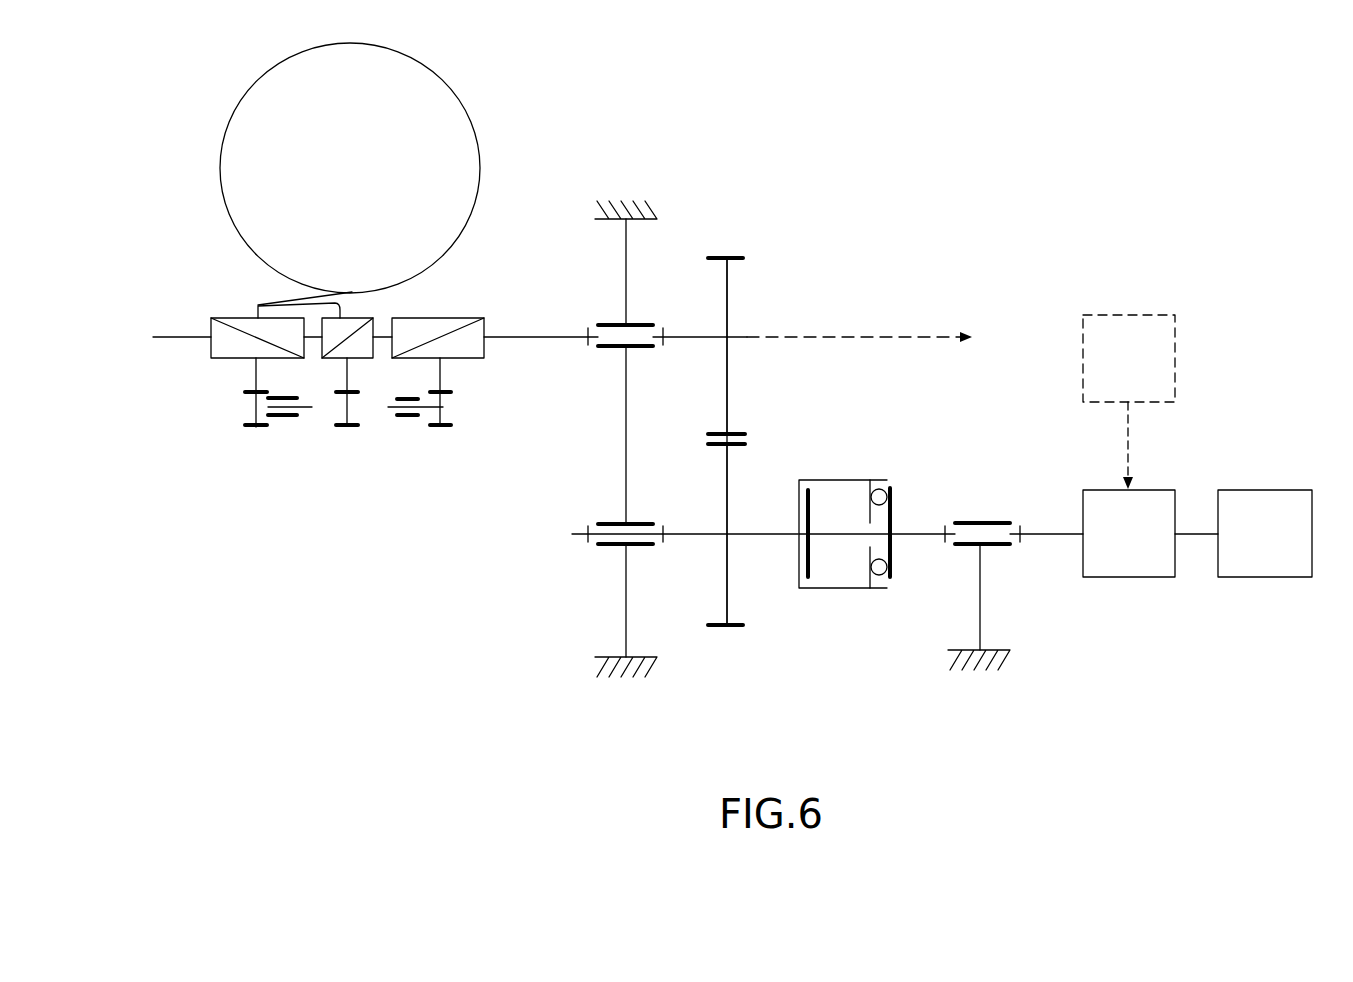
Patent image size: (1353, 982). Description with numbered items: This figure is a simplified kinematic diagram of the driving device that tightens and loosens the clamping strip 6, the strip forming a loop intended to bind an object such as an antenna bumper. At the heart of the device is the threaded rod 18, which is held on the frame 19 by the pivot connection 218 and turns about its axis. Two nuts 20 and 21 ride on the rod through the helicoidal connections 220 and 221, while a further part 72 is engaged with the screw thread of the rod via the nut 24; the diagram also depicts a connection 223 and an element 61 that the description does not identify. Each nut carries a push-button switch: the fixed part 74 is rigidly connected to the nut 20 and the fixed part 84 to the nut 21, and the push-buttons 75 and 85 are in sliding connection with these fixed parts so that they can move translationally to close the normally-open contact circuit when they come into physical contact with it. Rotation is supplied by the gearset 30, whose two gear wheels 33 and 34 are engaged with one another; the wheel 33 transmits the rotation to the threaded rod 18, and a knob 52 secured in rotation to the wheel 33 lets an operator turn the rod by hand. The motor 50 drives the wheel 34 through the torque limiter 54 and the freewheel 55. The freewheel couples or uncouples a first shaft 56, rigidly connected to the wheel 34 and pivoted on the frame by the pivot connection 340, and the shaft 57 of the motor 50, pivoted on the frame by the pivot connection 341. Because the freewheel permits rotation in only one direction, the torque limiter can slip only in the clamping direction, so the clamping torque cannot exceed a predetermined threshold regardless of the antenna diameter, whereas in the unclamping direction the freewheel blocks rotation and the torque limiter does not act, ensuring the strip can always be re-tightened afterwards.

The clamping strip 6 is at (253, 88).
The threaded rod 18 is at (165, 337).
The frame 19 is at (615, 195).
The nut 20 is at (252, 373).
The nut 21 is at (443, 382).
The nut 24 is at (340, 377).
The gearset 30 is at (717, 660).
The gear wheel 33 is at (728, 297).
The gear wheel 34 is at (728, 567).
The motor 50 is at (1140, 578).
The knob 52 is at (1278, 578).
The torque limiter 54 is at (800, 602).
The freewheel 55 is at (880, 604).
The first shaft 56 is at (695, 537).
The shaft of the motor 57 is at (922, 537).
The control unit 61 is at (1120, 312).
The part 72 is at (353, 415).
The fixed part 74 is at (247, 410).
The push-button 75 is at (283, 417).
The fixed part 84 is at (443, 413).
The push-button 85 is at (407, 418).
The pivot connection 218 is at (600, 307).
The helicoidal connection 220 is at (226, 317).
The helicoidal connection 221 is at (461, 318).
The third reduction module 223 is at (440, 318).
The pivot connection 340 is at (575, 547).
The pivot connection 341 is at (985, 500).